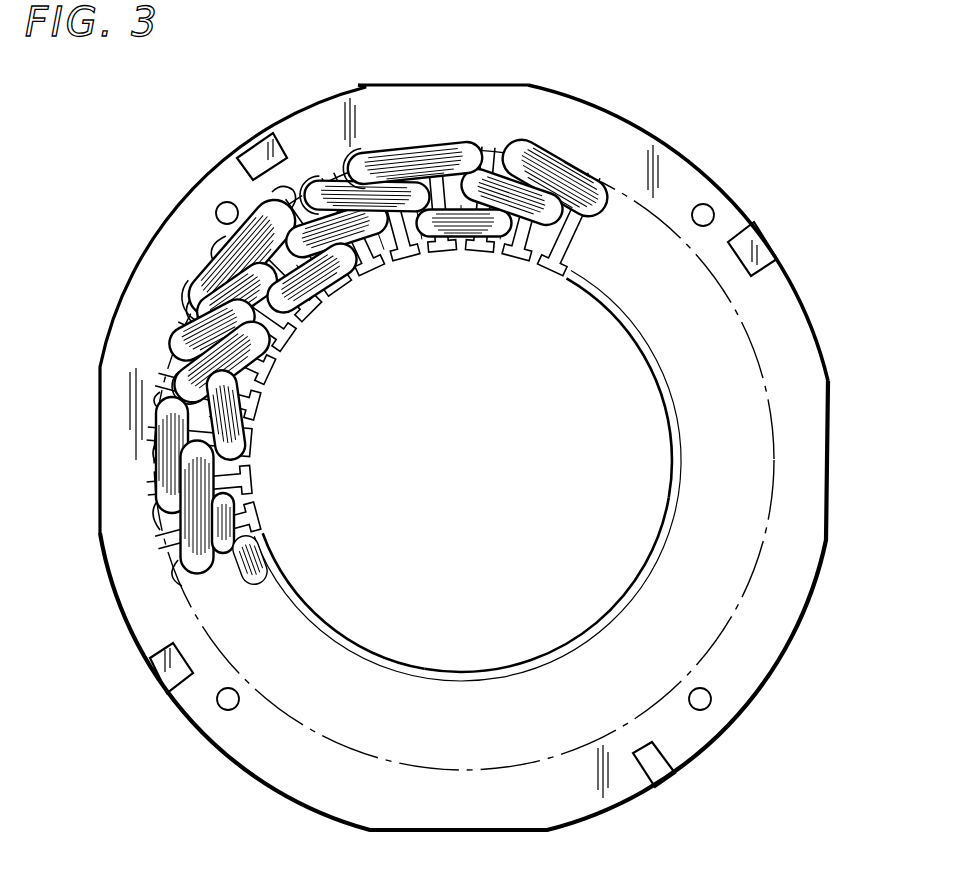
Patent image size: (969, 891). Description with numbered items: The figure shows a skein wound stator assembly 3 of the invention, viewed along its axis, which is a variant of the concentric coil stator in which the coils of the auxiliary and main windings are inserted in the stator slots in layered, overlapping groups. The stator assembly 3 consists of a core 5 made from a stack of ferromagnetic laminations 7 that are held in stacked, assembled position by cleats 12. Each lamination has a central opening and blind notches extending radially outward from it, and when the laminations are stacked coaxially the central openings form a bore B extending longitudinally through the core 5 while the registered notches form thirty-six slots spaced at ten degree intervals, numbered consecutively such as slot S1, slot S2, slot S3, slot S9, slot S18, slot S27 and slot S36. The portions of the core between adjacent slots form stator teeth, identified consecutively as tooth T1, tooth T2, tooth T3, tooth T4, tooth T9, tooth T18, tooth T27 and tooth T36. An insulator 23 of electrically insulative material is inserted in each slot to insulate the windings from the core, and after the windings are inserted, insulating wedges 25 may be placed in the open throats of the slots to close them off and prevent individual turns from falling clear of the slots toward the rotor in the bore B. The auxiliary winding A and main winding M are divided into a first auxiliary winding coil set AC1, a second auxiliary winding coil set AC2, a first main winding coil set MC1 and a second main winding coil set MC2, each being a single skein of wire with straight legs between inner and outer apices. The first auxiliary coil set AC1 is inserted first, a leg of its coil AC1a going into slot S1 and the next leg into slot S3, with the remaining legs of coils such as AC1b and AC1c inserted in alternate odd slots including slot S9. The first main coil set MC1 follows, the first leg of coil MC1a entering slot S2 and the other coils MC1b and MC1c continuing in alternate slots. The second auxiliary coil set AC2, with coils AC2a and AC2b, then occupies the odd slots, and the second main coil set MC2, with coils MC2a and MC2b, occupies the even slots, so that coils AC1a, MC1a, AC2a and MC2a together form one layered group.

The stator assembly 3 is at (808, 232).
The core 5 is at (801, 296).
The cleats 12 is at (758, 243).
The bore B is at (660, 416).
The stator tooth T27 is at (646, 479).
The stator tooth T18 is at (452, 659).
The slot S27 is at (785, 515).
The slot S18 is at (431, 777).
The stator tooth T36 is at (488, 211).
The stator tooth T1 is at (445, 210).
The stator tooth T2 is at (401, 214).
The stator tooth T3 is at (360, 231).
The stator tooth T4 is at (320, 251).
The stator tooth T9 is at (219, 438).
The slot S36 is at (534, 146).
The slot S1 is at (468, 140).
The slot S2 is at (403, 141).
The slot S3 is at (343, 152).
The slot S9 is at (142, 396).
The second main winding coil set MC2 is at (374, 309).
The insulating wedges 25 is at (383, 283).
The insulator 23 is at (218, 242).
The auxiliary winding coil AC1b is at (236, 240).
The second auxiliary winding coil set AC2 is at (256, 208).
The main winding coil MC1a is at (340, 193).
The auxiliary winding coil AC2a is at (299, 217).
The main winding coil MC2a is at (304, 284).
The main winding M is at (315, 164).
The first main winding coil set MC1 is at (464, 257).
The auxiliary winding A is at (496, 129).
The first auxiliary winding coil set AC1 is at (444, 135).
The auxiliary winding coil AC1a is at (406, 167).
The main winding coil MC1b is at (190, 340).
The auxiliary winding coil AC2b is at (186, 380).
The main winding coil MC2b is at (264, 398).
The auxiliary winding coil AC1c is at (168, 468).
The main winding coil MC1c is at (187, 534).
The laminations 7 is at (383, 340).